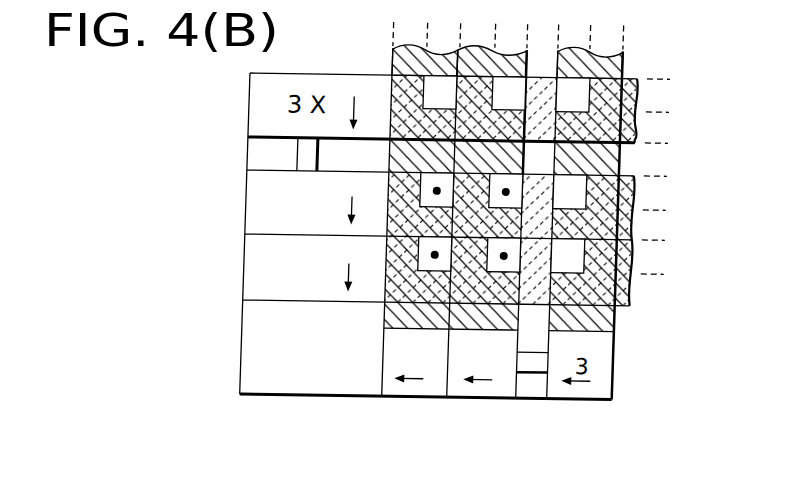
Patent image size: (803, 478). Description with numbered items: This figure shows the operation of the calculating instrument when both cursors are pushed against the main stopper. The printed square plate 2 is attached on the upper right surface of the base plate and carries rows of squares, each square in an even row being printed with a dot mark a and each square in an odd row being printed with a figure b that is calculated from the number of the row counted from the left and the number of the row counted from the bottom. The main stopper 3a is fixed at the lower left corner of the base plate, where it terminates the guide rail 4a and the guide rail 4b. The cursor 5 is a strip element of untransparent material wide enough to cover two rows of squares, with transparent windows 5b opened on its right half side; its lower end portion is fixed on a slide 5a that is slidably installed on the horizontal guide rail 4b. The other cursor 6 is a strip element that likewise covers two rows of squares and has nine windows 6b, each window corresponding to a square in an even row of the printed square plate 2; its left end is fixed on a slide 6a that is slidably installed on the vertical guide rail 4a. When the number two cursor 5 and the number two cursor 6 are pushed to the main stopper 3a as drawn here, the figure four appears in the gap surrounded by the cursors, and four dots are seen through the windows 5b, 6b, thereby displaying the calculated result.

The printed square plate 2 is at (651, 92).
The cursor 5 is at (573, 55).
The cursor 6 is at (628, 72).
The dot mark a is at (566, 241).
The figure b is at (563, 162).
The main stopper 3a is at (320, 376).
The guide rail 4a is at (308, 152).
The guide rail 4b is at (537, 361).
The slide 5a is at (478, 385).
The slide 6a is at (264, 256).
The transparent windows 5b is at (391, 228).
The windows 6b is at (395, 300).